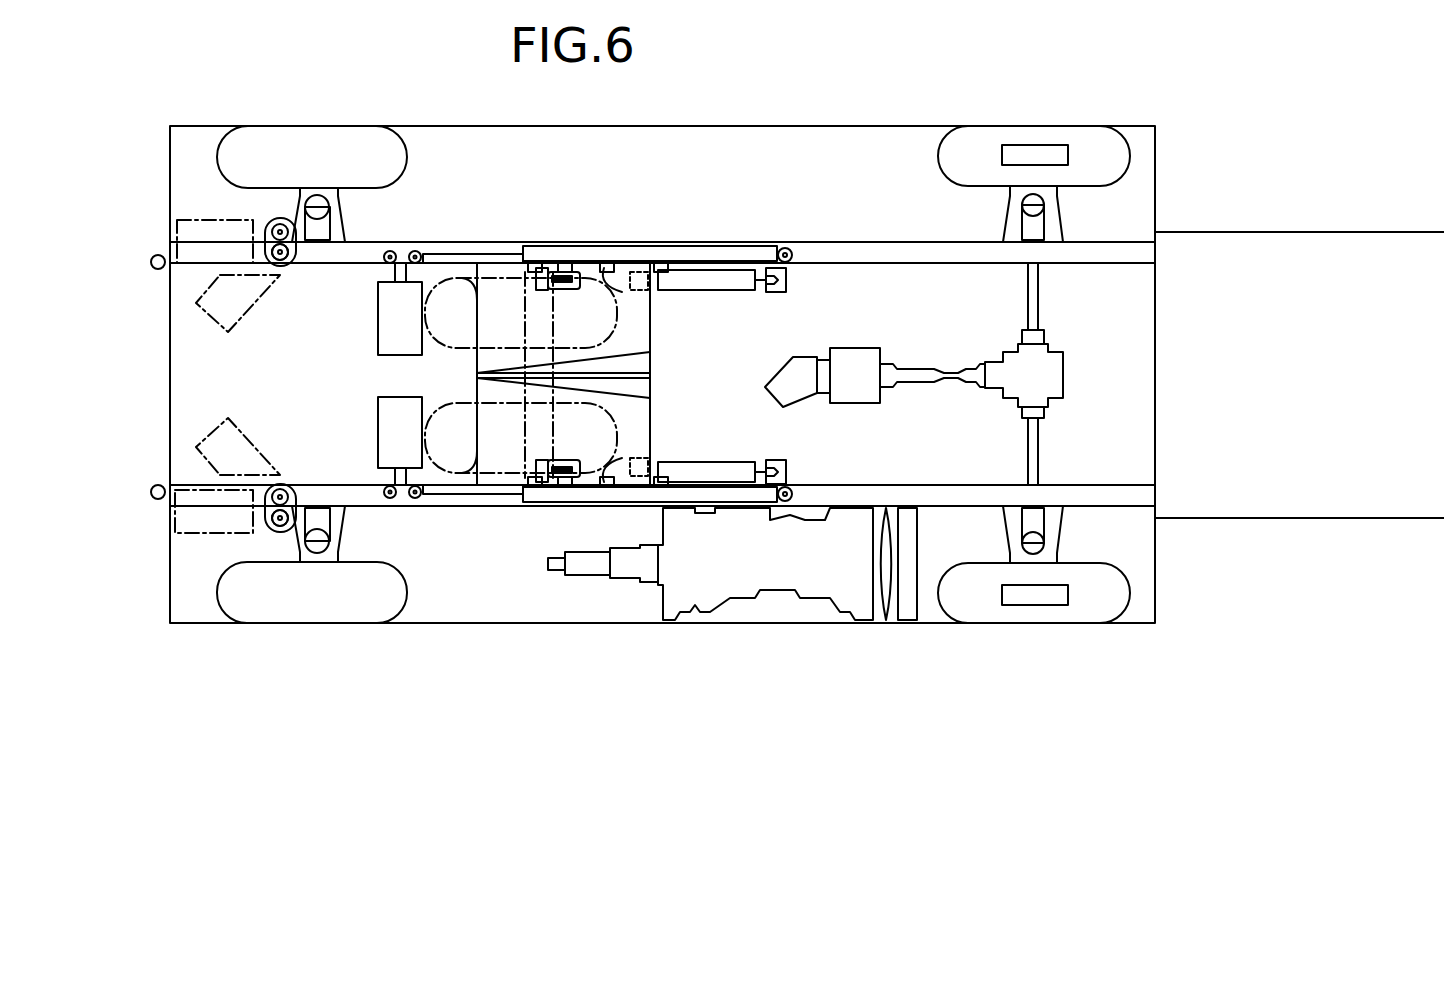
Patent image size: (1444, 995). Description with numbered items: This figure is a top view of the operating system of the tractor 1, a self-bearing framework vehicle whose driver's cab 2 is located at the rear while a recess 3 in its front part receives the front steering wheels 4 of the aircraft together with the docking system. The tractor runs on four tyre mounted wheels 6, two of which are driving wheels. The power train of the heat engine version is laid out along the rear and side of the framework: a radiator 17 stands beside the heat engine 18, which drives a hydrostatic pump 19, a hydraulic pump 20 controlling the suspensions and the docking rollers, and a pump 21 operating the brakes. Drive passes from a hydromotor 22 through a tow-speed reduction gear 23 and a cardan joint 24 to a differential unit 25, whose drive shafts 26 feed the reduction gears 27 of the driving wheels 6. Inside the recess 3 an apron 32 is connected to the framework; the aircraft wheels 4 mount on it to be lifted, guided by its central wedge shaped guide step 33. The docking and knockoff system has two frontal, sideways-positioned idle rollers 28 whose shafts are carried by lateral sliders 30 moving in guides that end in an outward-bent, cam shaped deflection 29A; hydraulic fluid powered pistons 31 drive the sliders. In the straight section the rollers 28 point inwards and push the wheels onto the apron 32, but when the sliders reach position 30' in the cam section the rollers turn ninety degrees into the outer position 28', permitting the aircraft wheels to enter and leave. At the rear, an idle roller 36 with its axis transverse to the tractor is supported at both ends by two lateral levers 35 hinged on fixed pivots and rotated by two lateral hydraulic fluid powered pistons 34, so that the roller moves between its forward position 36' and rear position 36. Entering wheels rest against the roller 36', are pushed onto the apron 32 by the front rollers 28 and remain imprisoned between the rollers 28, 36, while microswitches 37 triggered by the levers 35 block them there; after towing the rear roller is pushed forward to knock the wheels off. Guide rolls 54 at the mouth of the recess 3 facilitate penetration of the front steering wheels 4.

The tractor 1 is at (818, 137).
The driver's cab 2 is at (1280, 250).
The recess 3 is at (263, 365).
The front steering wheels 4 is at (488, 296).
The tyre mounted wheels 6 is at (342, 140).
The radiator 17 is at (906, 607).
The heat engine 18 is at (780, 590).
The hydrostatic pump 19 is at (638, 580).
The hydraulic pump 20 is at (585, 575).
The pump 21 is at (548, 565).
The hydromotor 22 is at (790, 364).
The tow-speed reduction gear 23 is at (852, 352).
The cardan joint 24 is at (920, 372).
The differential unit 25 is at (1058, 352).
The drive shafts 26 is at (1030, 295).
The reduction gears 27 is at (1060, 150).
The idle rollers 28 is at (369, 375).
The outward roller position 28' is at (185, 370).
The cam shaped deflection 29A is at (285, 222).
The lateral sliders 30 is at (413, 377).
The slider position 30' is at (279, 423).
The hydraulic fluid powered pistons 31 is at (770, 246).
The apron 32 is at (475, 352).
The central wedge shaped guide step 33 is at (615, 385).
The lateral hydraulic fluid powered pistons 34 is at (735, 290).
The lateral levers 35 is at (610, 287).
The idle roller 36 is at (597, 337).
The idle roller forward position 36' is at (535, 342).
The microswitches 37 is at (665, 280).
The guide rolls 54 is at (158, 270).